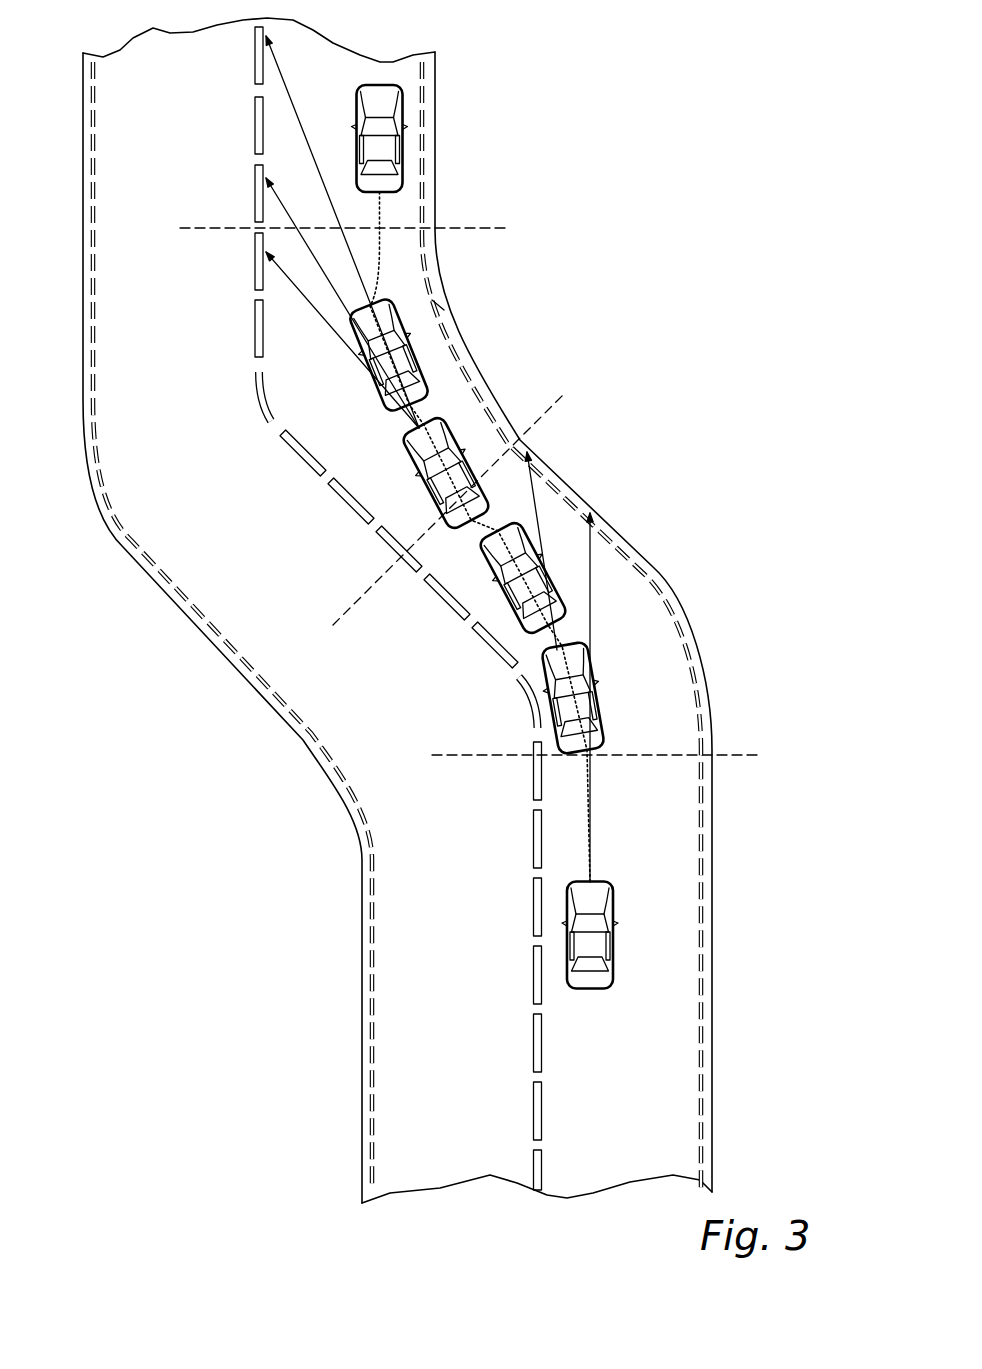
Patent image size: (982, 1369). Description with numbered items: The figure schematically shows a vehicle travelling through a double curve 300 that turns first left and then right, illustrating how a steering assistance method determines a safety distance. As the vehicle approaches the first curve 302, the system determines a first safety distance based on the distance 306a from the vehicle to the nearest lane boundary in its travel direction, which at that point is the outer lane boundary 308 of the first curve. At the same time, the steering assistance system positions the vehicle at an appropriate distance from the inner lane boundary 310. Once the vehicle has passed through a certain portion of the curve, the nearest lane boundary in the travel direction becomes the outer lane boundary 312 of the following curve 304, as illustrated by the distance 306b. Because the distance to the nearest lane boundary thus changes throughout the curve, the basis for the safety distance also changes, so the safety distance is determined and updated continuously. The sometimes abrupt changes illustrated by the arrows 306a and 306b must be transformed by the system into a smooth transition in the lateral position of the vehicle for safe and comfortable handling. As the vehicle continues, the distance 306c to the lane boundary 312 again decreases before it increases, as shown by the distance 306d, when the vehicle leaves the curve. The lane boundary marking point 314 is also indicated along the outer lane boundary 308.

The double curve 300 is at (703, 450).
The first curve 302 is at (700, 650).
The following curve 304 is at (188, 620).
The distance 306a is at (543, 523).
The distance 306b is at (422, 412).
The distance 306c is at (330, 338).
The distance 306d is at (337, 217).
The outer lane boundary 308 is at (705, 722).
The inner lane boundary 310 is at (497, 653).
The outer lane boundary 312 is at (277, 417).
The lane marking reference point 314 is at (438, 305).